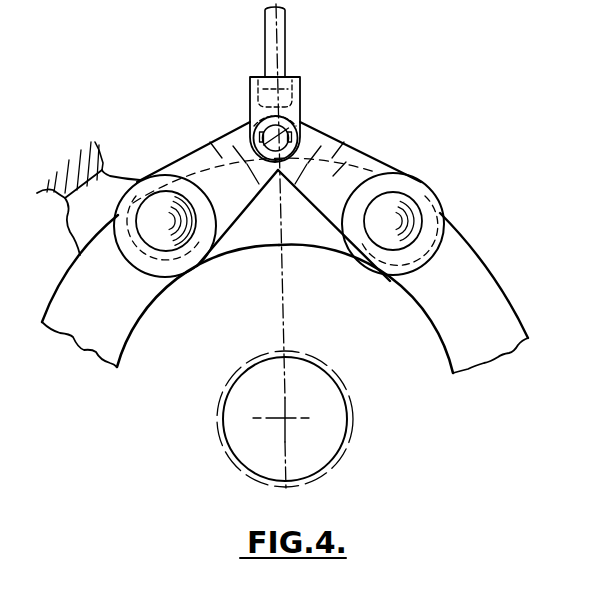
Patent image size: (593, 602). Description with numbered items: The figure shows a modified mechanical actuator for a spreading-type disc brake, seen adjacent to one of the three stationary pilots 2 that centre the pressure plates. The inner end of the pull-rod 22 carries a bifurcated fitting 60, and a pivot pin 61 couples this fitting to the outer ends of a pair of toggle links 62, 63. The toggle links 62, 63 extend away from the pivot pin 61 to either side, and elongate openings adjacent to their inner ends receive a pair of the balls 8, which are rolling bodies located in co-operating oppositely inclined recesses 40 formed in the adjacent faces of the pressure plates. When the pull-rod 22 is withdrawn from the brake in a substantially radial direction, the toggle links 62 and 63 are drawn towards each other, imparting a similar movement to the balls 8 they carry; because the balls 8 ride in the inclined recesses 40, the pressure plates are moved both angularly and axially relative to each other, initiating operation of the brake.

The stationary pilot 2 is at (75, 146).
The balls 8 is at (151, 231).
The pull-rod 22 is at (278, 34).
The recesses 40 is at (203, 212).
The bifurcated fitting 60 is at (291, 112).
The pivot pin 61 is at (251, 129).
The toggle link 62 is at (207, 160).
The toggle link 63 is at (393, 173).